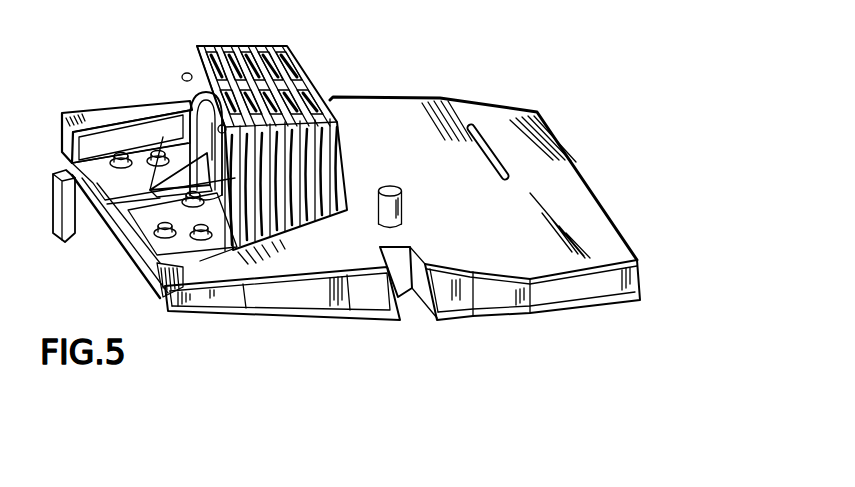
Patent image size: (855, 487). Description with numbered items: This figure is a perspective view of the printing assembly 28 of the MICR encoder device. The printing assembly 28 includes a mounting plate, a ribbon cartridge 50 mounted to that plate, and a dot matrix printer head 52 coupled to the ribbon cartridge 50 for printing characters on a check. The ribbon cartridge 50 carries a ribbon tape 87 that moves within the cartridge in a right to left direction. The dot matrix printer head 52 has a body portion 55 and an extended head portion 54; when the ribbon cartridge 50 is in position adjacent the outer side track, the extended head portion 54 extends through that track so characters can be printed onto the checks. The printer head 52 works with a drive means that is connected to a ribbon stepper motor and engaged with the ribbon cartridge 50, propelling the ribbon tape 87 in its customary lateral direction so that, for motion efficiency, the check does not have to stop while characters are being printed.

The printing assembly 28 is at (578, 116).
The ribbon cartridge 50 is at (597, 243).
The dot matrix printer head 52 is at (237, 44).
The body portion 55 is at (283, 87).
The extended head portion 54 is at (163, 137).
The ribbon tape 87 is at (120, 247).